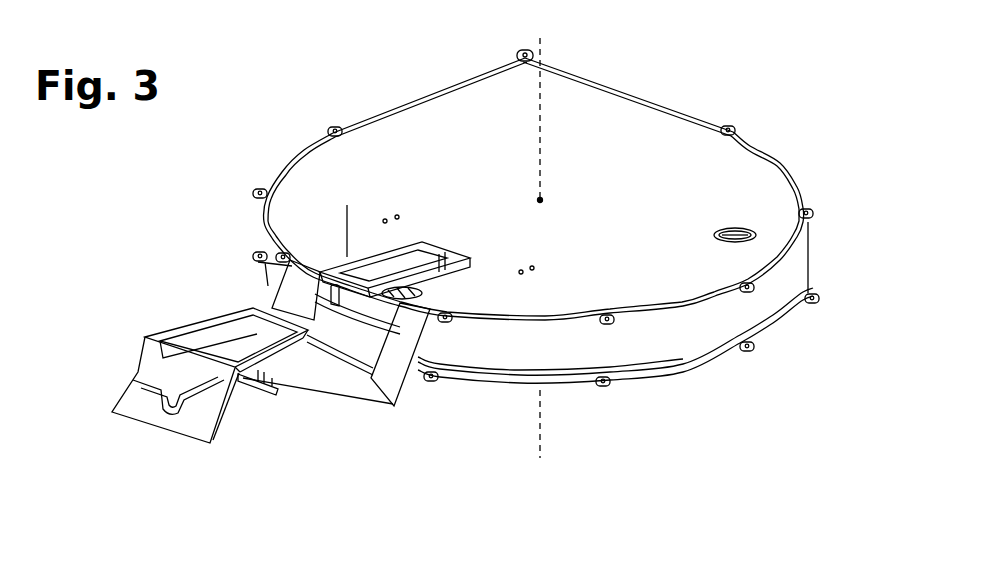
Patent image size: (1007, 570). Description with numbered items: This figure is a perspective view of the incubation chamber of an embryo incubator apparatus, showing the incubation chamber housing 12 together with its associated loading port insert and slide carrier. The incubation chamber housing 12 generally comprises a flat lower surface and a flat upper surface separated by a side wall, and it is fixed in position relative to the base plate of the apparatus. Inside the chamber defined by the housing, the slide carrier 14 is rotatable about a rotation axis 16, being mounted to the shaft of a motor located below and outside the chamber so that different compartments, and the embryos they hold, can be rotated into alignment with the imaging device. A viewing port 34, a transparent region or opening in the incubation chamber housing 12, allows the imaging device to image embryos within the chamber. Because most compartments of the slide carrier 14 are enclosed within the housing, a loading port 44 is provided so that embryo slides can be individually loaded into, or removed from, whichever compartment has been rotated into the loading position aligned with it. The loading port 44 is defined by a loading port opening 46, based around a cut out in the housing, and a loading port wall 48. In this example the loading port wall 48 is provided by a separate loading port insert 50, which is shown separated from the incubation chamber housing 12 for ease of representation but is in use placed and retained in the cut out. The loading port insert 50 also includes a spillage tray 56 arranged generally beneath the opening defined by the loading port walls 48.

The incubation chamber housing 12 is at (655, 143).
The slide carrier 14 is at (378, 312).
The rotation axis 16 is at (546, 148).
The viewing port 34 is at (750, 232).
The loading port 44 is at (193, 317).
The loading port opening 46 is at (415, 240).
The loading port wall 48 is at (183, 342).
The loading port insert 50 is at (123, 410).
The spillage tray 56 is at (255, 393).